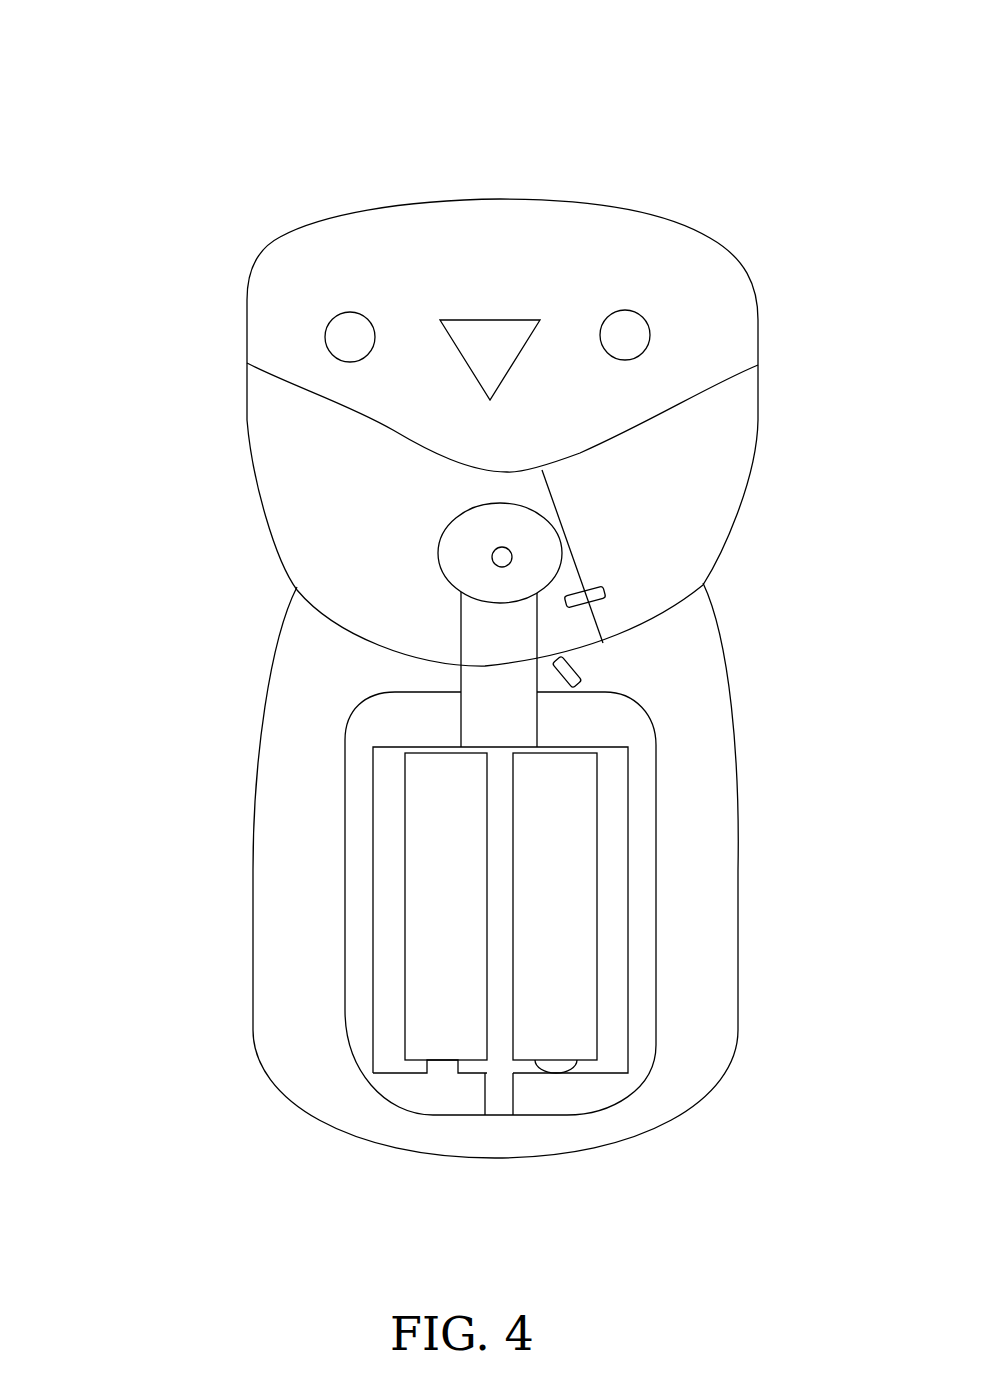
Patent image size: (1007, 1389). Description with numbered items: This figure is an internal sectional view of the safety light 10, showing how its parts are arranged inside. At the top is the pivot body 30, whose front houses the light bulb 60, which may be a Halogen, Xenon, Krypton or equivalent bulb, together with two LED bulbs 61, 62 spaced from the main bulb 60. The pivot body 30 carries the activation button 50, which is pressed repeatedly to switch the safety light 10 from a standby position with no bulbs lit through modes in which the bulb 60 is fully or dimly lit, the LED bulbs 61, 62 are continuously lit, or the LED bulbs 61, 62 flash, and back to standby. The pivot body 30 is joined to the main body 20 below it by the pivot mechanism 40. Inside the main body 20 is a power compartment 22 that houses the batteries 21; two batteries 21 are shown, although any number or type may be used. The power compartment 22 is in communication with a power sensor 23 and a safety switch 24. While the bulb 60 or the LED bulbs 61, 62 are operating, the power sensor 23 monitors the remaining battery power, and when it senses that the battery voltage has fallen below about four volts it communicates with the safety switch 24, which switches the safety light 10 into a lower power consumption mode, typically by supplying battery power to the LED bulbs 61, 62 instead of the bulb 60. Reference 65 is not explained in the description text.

The safety light 10 is at (250, 95).
The main body 20 is at (724, 915).
The batteries 21 is at (429, 1062).
The power compartment 22 is at (656, 833).
The power sensor 23 is at (582, 666).
The safety switch 24 is at (600, 592).
The pivot body 30 is at (725, 433).
The pivot mechanism 40 is at (358, 638).
The activation button 50 is at (563, 528).
The light bulb 60 is at (520, 316).
The LED bulb 61 is at (643, 318).
The LED bulb 62 is at (332, 320).
The top of head 65 is at (497, 200).